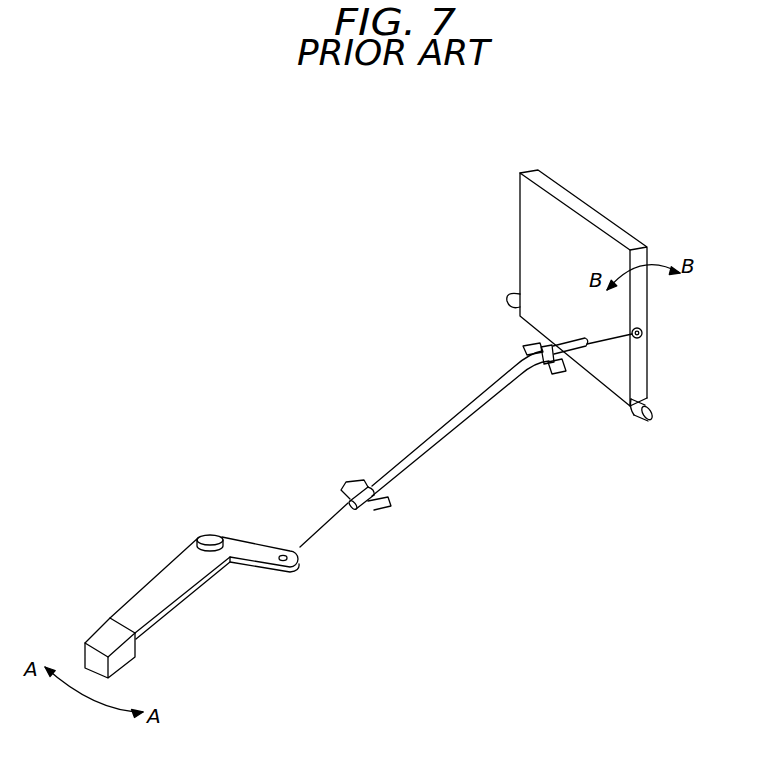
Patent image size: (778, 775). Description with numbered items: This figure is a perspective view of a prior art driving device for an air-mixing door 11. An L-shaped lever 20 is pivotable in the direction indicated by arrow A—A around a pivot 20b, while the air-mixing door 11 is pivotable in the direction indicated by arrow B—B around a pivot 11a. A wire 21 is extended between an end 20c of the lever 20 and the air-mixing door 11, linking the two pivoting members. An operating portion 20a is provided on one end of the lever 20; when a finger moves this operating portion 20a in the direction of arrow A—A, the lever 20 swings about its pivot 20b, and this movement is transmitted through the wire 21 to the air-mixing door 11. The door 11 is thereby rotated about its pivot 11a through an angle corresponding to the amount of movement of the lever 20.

The air-mixing door 11 is at (528, 205).
The pivot 11a is at (512, 297).
The L-shaped lever 20 is at (170, 577).
The operating portion 20a is at (123, 657).
The pivot 20b is at (212, 532).
The end of the lever 20c is at (293, 570).
The wire 21 is at (333, 522).